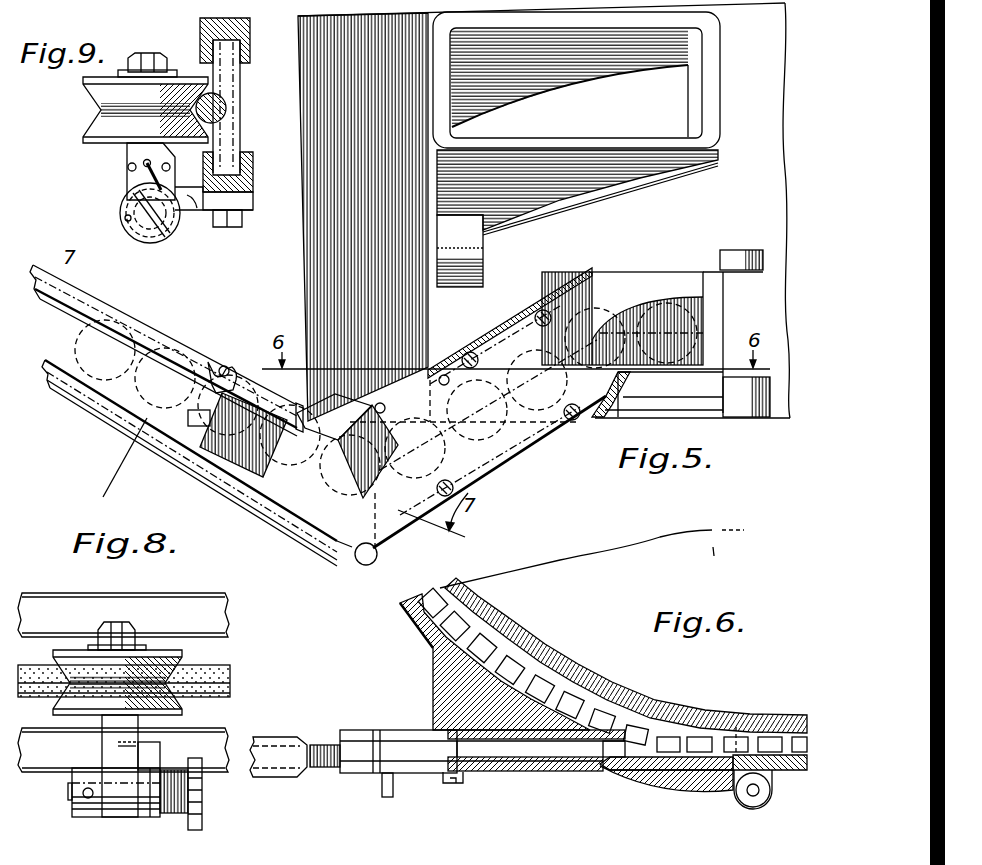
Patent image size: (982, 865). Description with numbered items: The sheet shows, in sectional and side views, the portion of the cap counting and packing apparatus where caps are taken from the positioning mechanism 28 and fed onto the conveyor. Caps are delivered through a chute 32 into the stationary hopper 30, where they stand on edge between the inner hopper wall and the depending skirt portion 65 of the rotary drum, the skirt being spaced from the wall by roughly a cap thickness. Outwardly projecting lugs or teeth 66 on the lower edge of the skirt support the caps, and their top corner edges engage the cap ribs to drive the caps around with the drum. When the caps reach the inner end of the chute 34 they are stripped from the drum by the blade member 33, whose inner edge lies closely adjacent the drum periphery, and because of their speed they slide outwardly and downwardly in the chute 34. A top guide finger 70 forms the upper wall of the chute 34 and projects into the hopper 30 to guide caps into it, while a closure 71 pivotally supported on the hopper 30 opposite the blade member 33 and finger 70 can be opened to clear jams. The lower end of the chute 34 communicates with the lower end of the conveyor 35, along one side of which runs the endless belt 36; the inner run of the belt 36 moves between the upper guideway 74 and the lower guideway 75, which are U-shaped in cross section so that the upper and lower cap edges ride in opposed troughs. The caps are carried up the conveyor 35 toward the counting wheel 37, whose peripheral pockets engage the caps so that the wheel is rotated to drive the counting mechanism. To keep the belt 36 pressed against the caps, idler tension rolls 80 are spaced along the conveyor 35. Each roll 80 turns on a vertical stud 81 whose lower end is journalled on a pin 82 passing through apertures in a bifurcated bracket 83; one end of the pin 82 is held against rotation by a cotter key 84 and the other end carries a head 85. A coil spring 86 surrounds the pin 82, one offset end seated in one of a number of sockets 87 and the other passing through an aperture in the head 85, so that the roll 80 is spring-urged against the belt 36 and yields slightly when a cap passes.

In FIG. 5, the article positioning mechanism 28 is at (313, 231).
In FIG. 6, the article positioning mechanism 28 is at (433, 684).
In FIG. 5, the stationary hopper 30 is at (313, 276).
In FIG. 6, the stationary hopper 30 is at (797, 770).
In FIG. 5, the chute 32 is at (690, 98).
In FIG. 5, the blade member 33 is at (705, 272).
In FIG. 6, the blade member 33 is at (655, 724).
In FIG. 5, the chute 34 is at (524, 438).
In FIG. 6, the chute 34 is at (529, 766).
In FIG. 9, the conveyor 35 is at (249, 36).
In FIG. 5, the conveyor 35 is at (157, 333).
In FIG. 8, the conveyor 35 is at (140, 600).
In FIG. 6, the conveyor 35 is at (281, 777).
In FIG. 9, the endless belt 36 is at (216, 107).
In FIG. 8, the endless belt 36 is at (222, 670).
In FIG. 5, the counting wheel 37 is at (706, 293).
In FIG. 6, the counting wheel 37 is at (555, 673).
In FIG. 6, the skirt portion 65 is at (617, 698).
In FIG. 6, the lugs or teeth 66 is at (687, 745).
In FIG. 5, the top guide finger 70 is at (600, 287).
In FIG. 6, the closure 71 is at (638, 778).
In FIG. 9, the upper guideway 74 is at (200, 27).
In FIG. 8, the upper guideway 74 is at (47, 603).
In FIG. 9, the lower guideway 75 is at (253, 178).
In FIG. 8, the lower guideway 75 is at (50, 757).
In FIG. 9, the idler tension roll 80 is at (97, 122).
In FIG. 8, the idler tension roll 80 is at (160, 650).
In FIG. 9, the vertical stud 81 is at (127, 178).
In FIG. 8, the vertical stud 81 is at (140, 722).
In FIG. 9, the pin 82 is at (137, 227).
In FIG. 8, the pin 82 is at (72, 795).
In FIG. 9, the bifurcated bracket 83 is at (200, 200).
In FIG. 8, the bifurcated bracket 83 is at (150, 812).
In FIG. 8, the cotter key 84 is at (88, 799).
In FIG. 8, the head 85 is at (196, 830).
In FIG. 9, the coil spring 86 is at (153, 177).
In FIG. 8, the coil spring 86 is at (172, 770).
In FIG. 9, the sockets 87 is at (128, 166).
In FIG. 8, the sockets 87 is at (130, 741).